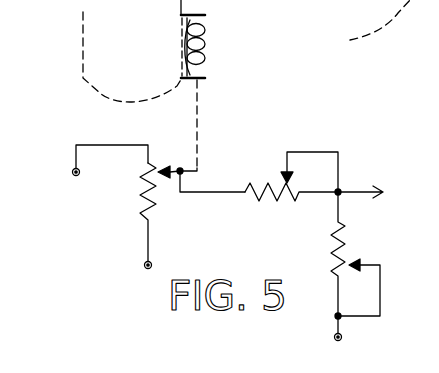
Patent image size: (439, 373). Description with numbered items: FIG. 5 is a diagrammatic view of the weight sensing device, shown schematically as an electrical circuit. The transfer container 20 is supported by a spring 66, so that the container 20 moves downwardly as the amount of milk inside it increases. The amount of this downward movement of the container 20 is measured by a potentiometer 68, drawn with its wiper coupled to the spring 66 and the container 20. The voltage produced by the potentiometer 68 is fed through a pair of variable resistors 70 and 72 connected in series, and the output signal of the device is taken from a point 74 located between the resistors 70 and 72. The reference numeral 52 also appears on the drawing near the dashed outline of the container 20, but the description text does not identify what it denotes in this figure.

The transfer container 20 is at (83, 53).
The float member 52 is at (330, 5).
The spring 66 is at (205, 62).
The potentiometer 68 is at (140, 190).
The variable resistor 70 is at (268, 181).
The variable resistor 72 is at (347, 241).
The point 74 is at (341, 190).